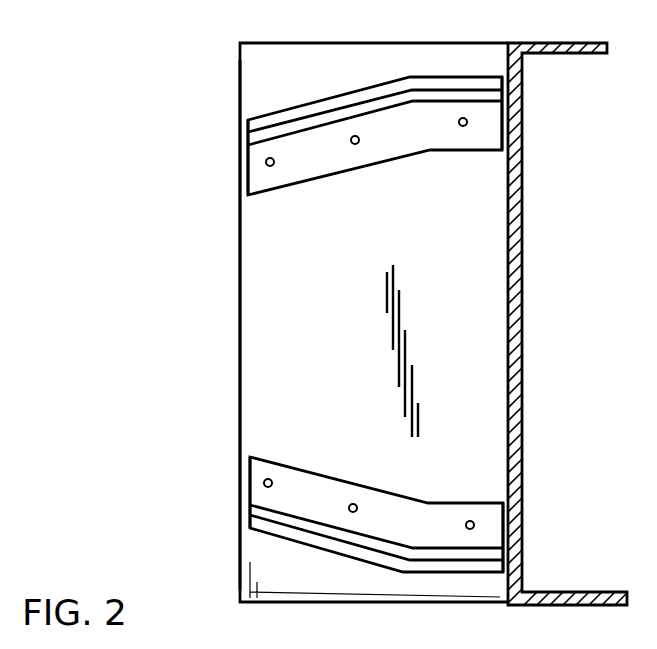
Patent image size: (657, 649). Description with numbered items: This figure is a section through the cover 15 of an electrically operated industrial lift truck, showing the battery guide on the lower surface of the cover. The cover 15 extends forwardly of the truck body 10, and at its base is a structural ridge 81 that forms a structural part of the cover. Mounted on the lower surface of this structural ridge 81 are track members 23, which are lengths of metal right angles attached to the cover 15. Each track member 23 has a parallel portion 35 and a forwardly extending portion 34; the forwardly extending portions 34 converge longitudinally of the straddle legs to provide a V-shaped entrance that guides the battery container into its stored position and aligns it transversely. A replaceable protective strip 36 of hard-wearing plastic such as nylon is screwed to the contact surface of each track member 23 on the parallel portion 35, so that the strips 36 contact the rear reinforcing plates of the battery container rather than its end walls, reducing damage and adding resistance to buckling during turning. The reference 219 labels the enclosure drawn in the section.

The body 10 is at (523, 317).
The cover 15 is at (231, 328).
The track member 23 is at (284, 199).
The forwardly extending portion 34 is at (330, 117).
The parallel portion 35 is at (445, 97).
The protective strip 36 is at (254, 118).
The structural ridge 81 is at (257, 373).
The housing 219 is at (370, 306).